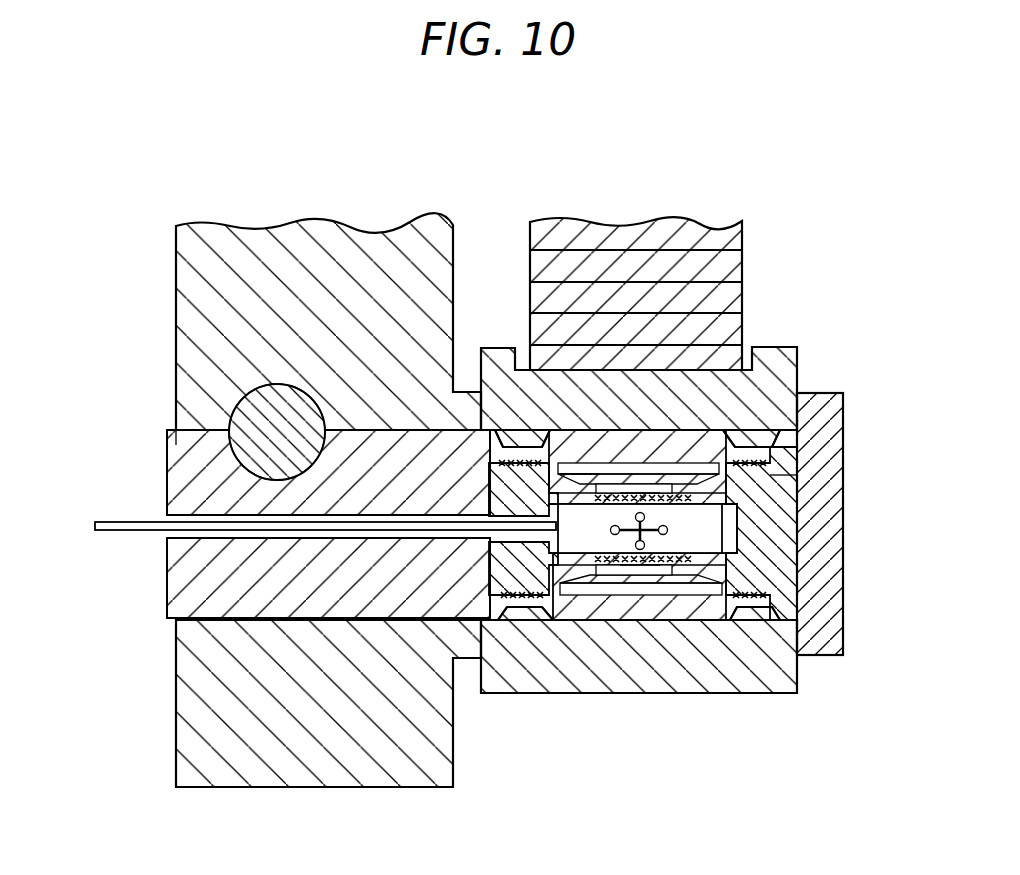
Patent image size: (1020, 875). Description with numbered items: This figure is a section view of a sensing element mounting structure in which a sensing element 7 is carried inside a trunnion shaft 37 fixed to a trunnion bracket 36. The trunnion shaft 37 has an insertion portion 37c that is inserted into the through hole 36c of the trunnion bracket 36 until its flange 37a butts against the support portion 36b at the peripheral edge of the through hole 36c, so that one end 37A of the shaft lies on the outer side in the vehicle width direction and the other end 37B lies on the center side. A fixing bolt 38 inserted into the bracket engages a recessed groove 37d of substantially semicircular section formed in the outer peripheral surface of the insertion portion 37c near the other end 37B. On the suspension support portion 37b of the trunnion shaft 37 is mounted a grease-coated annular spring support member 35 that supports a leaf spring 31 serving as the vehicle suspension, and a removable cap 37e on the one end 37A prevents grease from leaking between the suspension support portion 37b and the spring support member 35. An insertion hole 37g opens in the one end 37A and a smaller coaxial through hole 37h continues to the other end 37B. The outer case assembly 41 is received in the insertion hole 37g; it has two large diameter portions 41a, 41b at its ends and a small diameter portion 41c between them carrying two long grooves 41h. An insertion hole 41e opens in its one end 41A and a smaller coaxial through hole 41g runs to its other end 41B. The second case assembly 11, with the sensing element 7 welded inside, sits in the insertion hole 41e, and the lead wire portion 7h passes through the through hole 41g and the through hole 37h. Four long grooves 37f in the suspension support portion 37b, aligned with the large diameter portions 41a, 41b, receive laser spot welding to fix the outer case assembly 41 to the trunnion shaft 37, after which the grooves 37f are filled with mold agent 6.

The trunnion bracket 36 is at (330, 213).
The support portion 36b is at (195, 730).
The through hole 36c is at (192, 444).
The trunnion shaft 37 is at (604, 634).
The one end of trunnion shaft 37A is at (843, 441).
The other end of trunnion shaft 37B is at (172, 563).
The flange 37a is at (481, 625).
The suspension support portion 37b is at (790, 604).
The insertion portion 37c is at (187, 598).
The recessed groove 37d is at (230, 470).
The cap 37e is at (800, 383).
The long grooves 37f is at (505, 440).
The insertion hole 37g is at (712, 622).
The through hole 37h is at (218, 504).
The fixing bolt 38 is at (232, 394).
The leaf spring 31 is at (727, 292).
The spring support member 35 is at (795, 694).
The outer case assembly 41 is at (663, 415).
The one end of outer case assembly 41A is at (790, 588).
The other end of outer case assembly 41B is at (489, 562).
The large diameter portion 41a is at (790, 490).
The large diameter portion 41b is at (489, 463).
The small diameter portion 41c is at (592, 476).
The insertion hole 41e is at (790, 531).
The through hole 41g is at (500, 598).
The long grooves 41h is at (640, 493).
The second case assembly 11 is at (723, 487).
The mold agent 6 is at (524, 460).
The sensing element 7 is at (741, 520).
The lead wire portion 7h is at (100, 518).